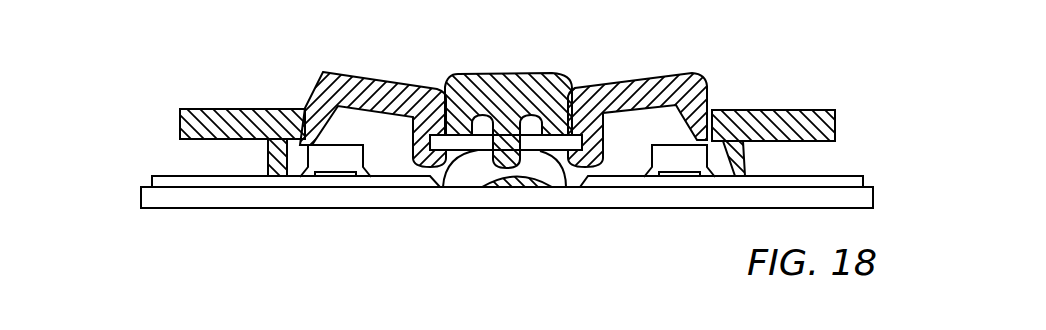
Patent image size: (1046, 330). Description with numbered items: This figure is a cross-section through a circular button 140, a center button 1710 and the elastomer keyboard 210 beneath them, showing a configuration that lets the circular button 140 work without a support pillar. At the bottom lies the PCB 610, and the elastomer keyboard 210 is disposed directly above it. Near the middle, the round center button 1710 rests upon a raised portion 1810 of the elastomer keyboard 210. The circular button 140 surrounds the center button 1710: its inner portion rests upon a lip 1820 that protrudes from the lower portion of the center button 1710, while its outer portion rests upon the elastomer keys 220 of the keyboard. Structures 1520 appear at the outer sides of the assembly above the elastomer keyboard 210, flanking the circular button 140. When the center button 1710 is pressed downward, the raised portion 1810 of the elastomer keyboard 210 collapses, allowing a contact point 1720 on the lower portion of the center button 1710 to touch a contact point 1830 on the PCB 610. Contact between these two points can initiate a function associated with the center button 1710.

The circular button 140 is at (373, 82).
The elastomer keyboard 210 is at (152, 178).
The elastomer keys 220 is at (333, 175).
The PCB 610 is at (141, 197).
The housing block 1520 is at (236, 109).
The center button 1710 is at (497, 72).
The contact point 1720 is at (488, 152).
The raised portion 1810 is at (562, 183).
The lip 1820 is at (455, 172).
The contact point 1830 is at (556, 190).